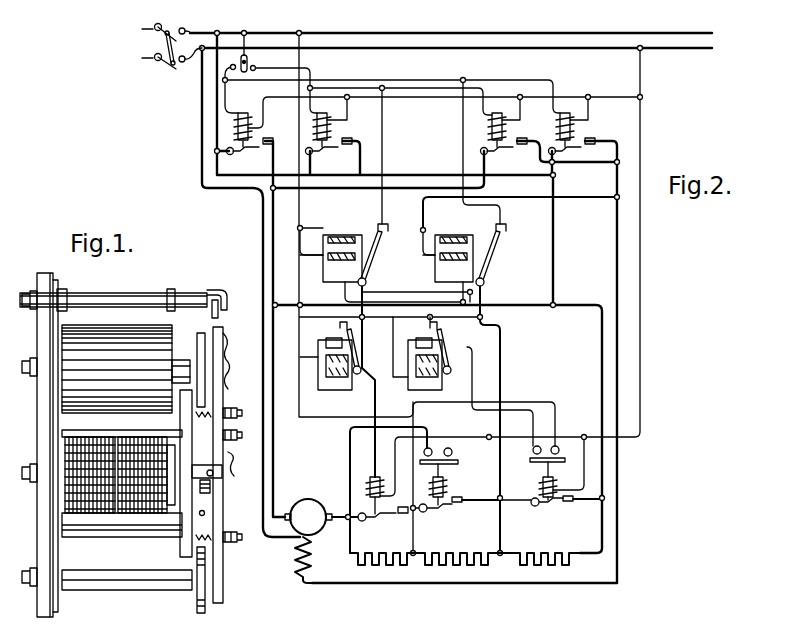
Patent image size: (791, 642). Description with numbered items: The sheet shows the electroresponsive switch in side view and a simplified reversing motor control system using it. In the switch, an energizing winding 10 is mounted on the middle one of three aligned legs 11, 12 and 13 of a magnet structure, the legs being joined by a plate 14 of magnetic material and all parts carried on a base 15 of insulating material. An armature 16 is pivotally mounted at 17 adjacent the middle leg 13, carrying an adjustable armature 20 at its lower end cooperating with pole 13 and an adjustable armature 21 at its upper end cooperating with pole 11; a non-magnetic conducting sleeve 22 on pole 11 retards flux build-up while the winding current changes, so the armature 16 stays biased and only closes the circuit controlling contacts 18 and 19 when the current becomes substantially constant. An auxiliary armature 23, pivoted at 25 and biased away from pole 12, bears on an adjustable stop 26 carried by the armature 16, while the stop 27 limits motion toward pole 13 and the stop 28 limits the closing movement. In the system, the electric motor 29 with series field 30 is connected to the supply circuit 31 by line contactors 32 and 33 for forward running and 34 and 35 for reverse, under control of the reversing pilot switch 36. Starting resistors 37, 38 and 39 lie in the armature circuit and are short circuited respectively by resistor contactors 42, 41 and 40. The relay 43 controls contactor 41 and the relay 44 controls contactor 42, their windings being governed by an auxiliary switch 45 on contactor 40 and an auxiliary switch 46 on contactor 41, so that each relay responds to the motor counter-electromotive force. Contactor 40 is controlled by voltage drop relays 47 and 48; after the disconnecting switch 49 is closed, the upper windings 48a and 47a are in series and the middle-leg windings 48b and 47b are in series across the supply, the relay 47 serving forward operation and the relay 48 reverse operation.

In FIG. 1, the energizing winding 10 is at (92, 518).
In FIG. 1, the leg 11 is at (181, 360).
In FIG. 1, the leg 12 is at (173, 480).
In FIG. 1, the leg 13 is at (163, 586).
In FIG. 1, the plate 14 is at (57, 592).
In FIG. 1, the base 15 is at (37, 432).
In FIG. 1, the armature 16 is at (226, 370).
In FIG. 1, the pivot 17 is at (215, 481).
In FIG. 1, the circuit controlling contact 18 is at (203, 292).
In FIG. 1, the circuit controlling contact 19 is at (219, 291).
In FIG. 1, the adjustable armature 20 is at (206, 611).
In FIG. 1, the adjustable armature 21 is at (199, 336).
In FIG. 1, the non-magnetic electric conducting sleeve 22 is at (117, 369).
In FIG. 1, the auxiliary armature 23 is at (222, 471).
In FIG. 1, the pivot 25 is at (205, 514).
In FIG. 1, the adjustable stop 26 is at (232, 447).
In FIG. 1, the stop 27 is at (210, 540).
In FIG. 1, the stop 28 is at (211, 414).
In FIG. 2, the electric motor 29 is at (305, 501).
In FIG. 2, the series field 30 is at (299, 560).
In FIG. 2, the supply circuit 31 is at (145, 58).
In FIG. 2, the line contactor 32 is at (250, 124).
In FIG. 2, the line contactor 33 is at (576, 121).
In FIG. 2, the line contactor 34 is at (333, 122).
In FIG. 2, the line contactor 35 is at (490, 129).
In FIG. 2, the reversing pilot switch 36 is at (249, 62).
In FIG. 2, the motor starting resistor 37 is at (381, 568).
In FIG. 2, the motor starting resistor 38 is at (456, 568).
In FIG. 2, the motor starting resistor 39 is at (548, 568).
In FIG. 2, the resistor contactor 40 is at (542, 491).
In FIG. 2, the resistor contactor 41 is at (434, 490).
In FIG. 2, the resistor contactor 42 is at (370, 489).
In FIG. 2, the relay 43 is at (455, 350).
In FIG. 2, the relay 44 is at (318, 367).
In FIG. 2, the auxiliary switch 45 is at (560, 462).
In FIG. 2, the auxiliary switch 46 is at (449, 463).
In FIG. 2, the voltage drop relay 47 is at (491, 255).
In FIG. 2, the upper winding 47a is at (457, 246).
In FIG. 2, the winding 47b is at (429, 273).
In FIG. 2, the voltage drop relay 48 is at (374, 255).
In FIG. 2, the upper winding 48a is at (342, 246).
In FIG. 2, the winding 48b is at (312, 273).
In FIG. 2, the disconnecting switch 49 is at (173, 67).